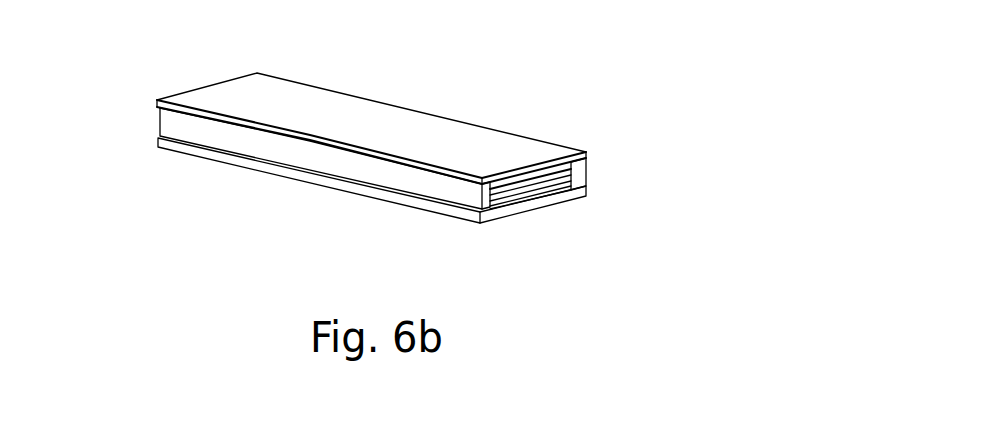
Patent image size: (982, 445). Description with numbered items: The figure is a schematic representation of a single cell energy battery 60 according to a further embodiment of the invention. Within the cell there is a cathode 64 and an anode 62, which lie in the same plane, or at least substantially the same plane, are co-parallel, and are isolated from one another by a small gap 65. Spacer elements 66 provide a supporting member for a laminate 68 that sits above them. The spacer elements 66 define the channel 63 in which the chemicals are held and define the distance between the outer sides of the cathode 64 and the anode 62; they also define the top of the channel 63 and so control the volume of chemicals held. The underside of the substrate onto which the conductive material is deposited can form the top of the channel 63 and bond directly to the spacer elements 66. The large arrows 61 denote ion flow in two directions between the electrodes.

The single cell energy battery 60 is at (461, 166).
The large arrows 61 is at (542, 186).
The anode 62 is at (488, 206).
The channel 63 is at (558, 177).
The cathode 64 is at (561, 198).
The small gap 65 is at (539, 213).
The spacer elements 66 is at (287, 165).
The laminate 68 is at (334, 112).